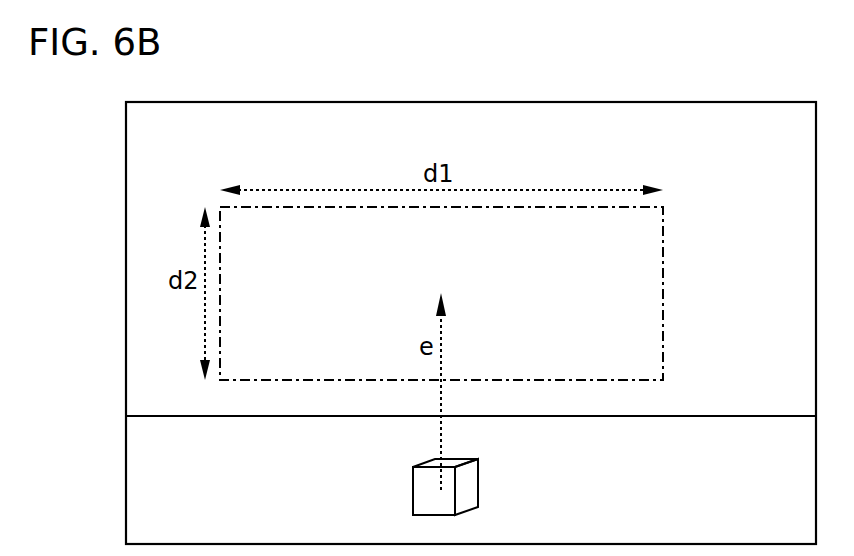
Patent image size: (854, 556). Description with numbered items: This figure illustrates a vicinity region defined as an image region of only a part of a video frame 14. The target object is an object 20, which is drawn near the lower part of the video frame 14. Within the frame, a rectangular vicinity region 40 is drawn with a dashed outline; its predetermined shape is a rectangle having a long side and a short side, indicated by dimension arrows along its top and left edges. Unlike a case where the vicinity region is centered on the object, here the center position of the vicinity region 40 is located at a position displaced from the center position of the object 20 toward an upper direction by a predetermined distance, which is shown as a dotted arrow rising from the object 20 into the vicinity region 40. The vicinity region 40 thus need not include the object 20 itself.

The video frame 14 is at (767, 102).
The vicinity region 40 is at (663, 255).
The object 20 is at (478, 476).